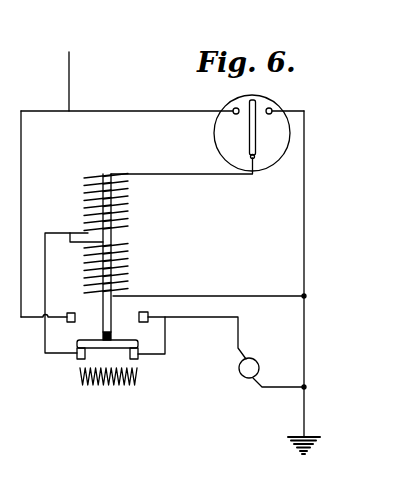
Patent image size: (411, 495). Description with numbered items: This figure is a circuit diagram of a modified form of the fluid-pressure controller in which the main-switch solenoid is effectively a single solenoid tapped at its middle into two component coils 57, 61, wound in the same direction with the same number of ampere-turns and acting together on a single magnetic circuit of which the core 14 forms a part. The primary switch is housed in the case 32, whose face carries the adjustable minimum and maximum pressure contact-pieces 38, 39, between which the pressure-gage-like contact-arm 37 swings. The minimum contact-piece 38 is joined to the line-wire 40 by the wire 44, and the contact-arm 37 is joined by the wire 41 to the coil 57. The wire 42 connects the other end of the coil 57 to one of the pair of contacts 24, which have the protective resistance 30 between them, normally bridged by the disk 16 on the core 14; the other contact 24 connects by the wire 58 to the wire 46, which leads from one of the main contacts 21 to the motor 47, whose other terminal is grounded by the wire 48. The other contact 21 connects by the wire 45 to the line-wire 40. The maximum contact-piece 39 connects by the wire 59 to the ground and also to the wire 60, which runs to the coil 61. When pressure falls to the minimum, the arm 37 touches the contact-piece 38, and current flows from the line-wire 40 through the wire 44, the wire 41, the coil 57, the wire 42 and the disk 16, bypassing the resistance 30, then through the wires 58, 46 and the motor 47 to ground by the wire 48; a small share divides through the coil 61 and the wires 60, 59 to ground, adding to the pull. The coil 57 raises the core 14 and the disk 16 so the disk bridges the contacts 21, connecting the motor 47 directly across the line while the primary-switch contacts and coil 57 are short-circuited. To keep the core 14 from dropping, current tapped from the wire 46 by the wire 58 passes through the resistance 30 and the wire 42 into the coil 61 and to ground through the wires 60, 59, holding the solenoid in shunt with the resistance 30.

The core 14 is at (112, 311).
The disk 16 is at (87, 343).
The contacts 21 is at (70, 313).
The contacts 24 is at (77, 358).
The protective resistance 30 is at (108, 386).
The case 32 is at (279, 161).
The contact-arm 37 is at (249, 136).
The minimum pressure contact-piece 38 is at (232, 108).
The maximum pressure contact-piece 39 is at (272, 107).
The line-wire 40 is at (70, 83).
The wire 41 is at (192, 176).
The wire 42 is at (45, 339).
The wire 44 is at (153, 114).
The wire 45 is at (22, 156).
The wire 46 is at (218, 319).
The motor 47 is at (259, 368).
The wire 48 is at (282, 388).
The coil 57 is at (86, 197).
The wire 58 is at (170, 334).
The wire 59 is at (307, 227).
The wire 60 is at (208, 295).
The coil 61 is at (128, 263).